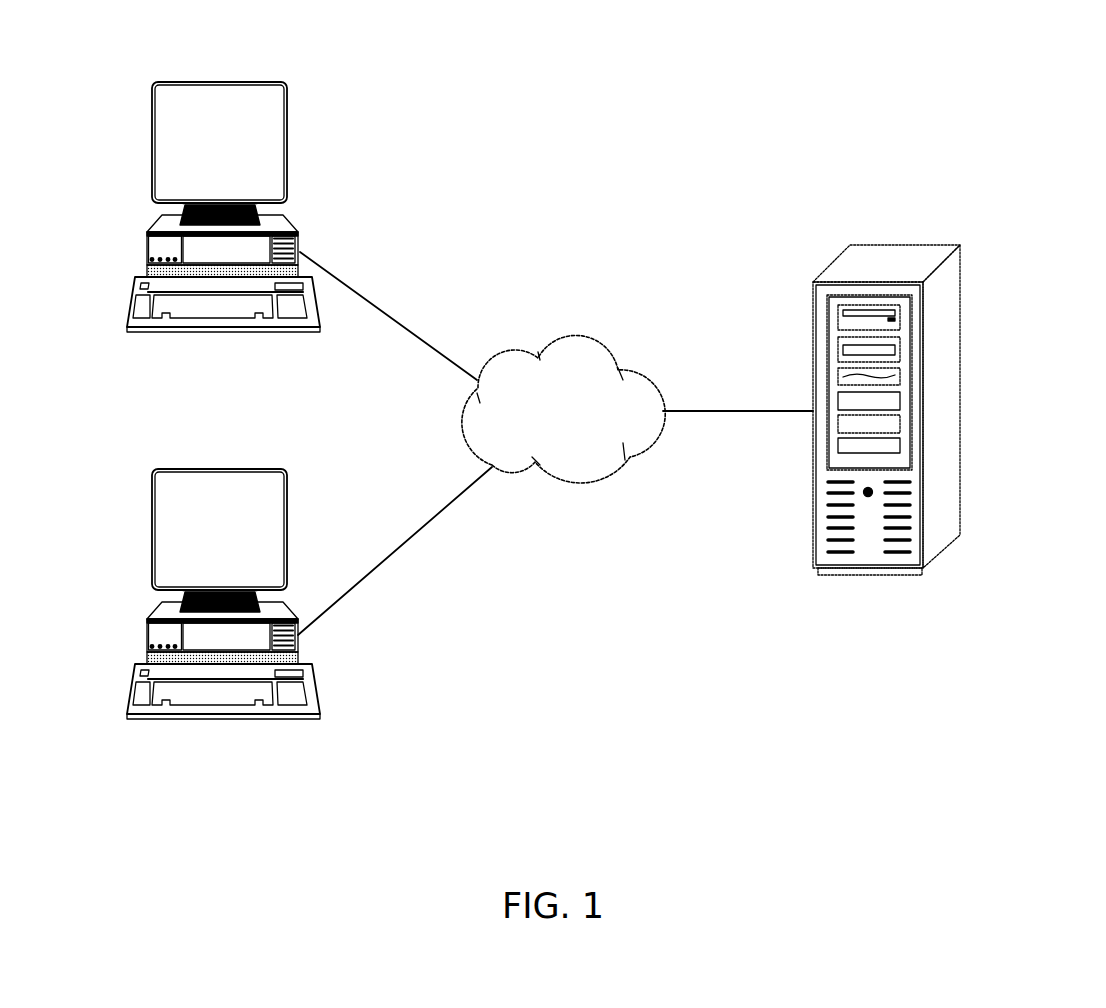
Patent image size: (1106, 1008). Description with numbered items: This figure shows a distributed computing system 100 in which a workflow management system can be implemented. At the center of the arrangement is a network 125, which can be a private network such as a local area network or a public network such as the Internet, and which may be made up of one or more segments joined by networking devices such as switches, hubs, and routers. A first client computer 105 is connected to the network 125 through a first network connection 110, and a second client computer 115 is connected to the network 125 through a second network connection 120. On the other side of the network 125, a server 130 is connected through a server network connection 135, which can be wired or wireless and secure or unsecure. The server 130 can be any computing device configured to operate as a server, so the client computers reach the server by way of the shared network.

The distributed computing system 100 is at (594, 94).
The first client computer 105 is at (288, 95).
The first network connection 110 is at (365, 295).
The second client computer 115 is at (152, 510).
The second network connection 120 is at (370, 572).
The network 125 is at (563, 337).
The server 130 is at (960, 328).
The server network connection 135 is at (695, 412).